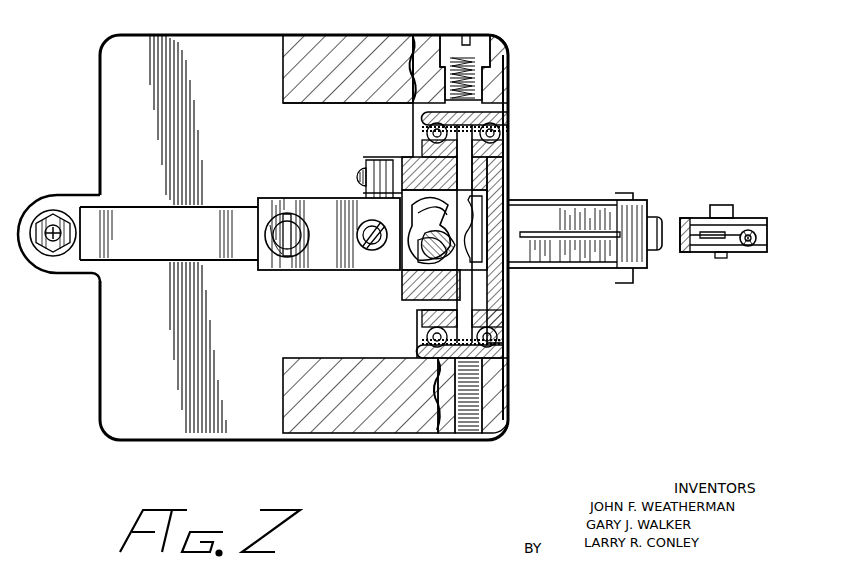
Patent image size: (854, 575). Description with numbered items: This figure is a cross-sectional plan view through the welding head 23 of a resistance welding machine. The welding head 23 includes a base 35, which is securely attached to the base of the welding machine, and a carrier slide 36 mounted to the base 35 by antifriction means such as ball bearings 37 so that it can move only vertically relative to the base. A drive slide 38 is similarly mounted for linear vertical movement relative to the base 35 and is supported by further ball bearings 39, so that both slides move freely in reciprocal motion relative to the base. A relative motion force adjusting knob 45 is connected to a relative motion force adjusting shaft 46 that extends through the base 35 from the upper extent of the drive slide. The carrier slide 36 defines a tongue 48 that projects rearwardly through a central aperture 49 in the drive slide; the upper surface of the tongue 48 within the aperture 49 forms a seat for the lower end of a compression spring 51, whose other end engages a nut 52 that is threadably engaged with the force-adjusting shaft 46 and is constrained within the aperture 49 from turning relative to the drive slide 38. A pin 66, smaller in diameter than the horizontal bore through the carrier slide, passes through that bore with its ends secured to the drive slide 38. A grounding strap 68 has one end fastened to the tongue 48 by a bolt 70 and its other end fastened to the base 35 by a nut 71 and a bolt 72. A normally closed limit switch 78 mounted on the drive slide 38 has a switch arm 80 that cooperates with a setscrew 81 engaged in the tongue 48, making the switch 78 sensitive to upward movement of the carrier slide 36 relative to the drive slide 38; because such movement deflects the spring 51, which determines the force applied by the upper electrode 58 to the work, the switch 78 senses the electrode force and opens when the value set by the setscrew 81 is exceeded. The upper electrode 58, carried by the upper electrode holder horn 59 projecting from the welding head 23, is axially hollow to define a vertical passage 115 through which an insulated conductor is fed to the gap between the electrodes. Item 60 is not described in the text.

The welding head 23 is at (576, 130).
The base 35 is at (236, 58).
The carrier slide 36 is at (508, 312).
The ball bearings 37 is at (500, 142).
The drive slide 38 is at (424, 312).
The ball bearings 39 is at (424, 118).
The relative motion force adjusting knob 45 is at (402, 272).
The relative motion force adjusting shaft 46 is at (505, 296).
The tongue 48 is at (312, 198).
The central aperture 49 is at (412, 272).
The compression spring 51 is at (505, 170).
The nut 52 is at (505, 200).
The upper electrode 58 is at (755, 232).
The upper electrode holder horn 59 is at (684, 218).
The drive shaft 60 is at (588, 200).
The pin 66 is at (411, 145).
The grounding strap 68 is at (158, 206).
The bolt 70 is at (300, 212).
The nut 71 is at (66, 242).
The bolt 72 is at (72, 220).
The limit switch 78 is at (366, 160).
The switch arm 80 is at (362, 179).
The setscrew 81 is at (368, 252).
The vertical passage 115 is at (742, 248).